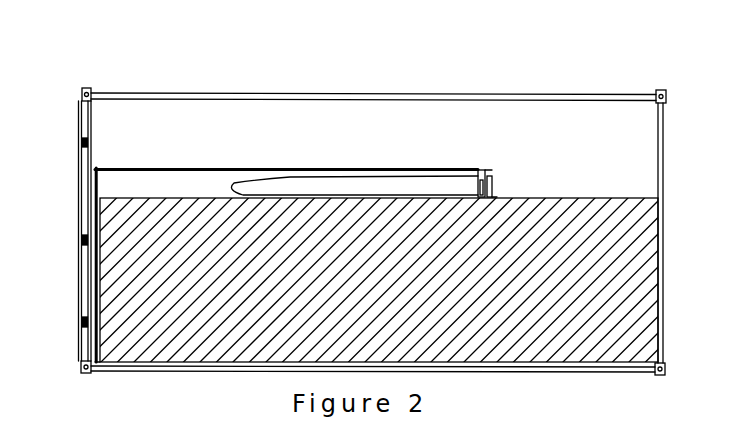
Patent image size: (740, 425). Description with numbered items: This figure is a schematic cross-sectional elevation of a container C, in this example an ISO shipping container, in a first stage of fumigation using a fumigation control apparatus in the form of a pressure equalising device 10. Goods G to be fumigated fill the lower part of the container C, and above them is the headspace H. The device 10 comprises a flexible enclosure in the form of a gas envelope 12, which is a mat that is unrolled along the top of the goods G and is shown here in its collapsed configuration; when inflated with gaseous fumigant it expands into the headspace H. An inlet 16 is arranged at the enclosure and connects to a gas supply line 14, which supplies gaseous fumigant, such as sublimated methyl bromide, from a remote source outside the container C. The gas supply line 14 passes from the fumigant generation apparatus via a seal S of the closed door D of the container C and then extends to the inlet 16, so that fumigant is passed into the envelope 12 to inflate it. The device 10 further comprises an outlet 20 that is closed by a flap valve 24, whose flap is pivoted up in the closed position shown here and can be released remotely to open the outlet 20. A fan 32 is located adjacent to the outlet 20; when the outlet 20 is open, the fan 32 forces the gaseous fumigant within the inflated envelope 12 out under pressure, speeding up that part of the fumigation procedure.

The pressure equalising device 10 is at (348, 195).
The gas envelope 12 is at (290, 176).
The gas supply line 14 is at (213, 168).
The inlet 16 is at (488, 169).
The outlet 20 is at (494, 196).
The flap valve 24 is at (491, 176).
The fan 32 is at (477, 168).
The container C is at (208, 94).
The closed door D is at (78, 150).
The goods G is at (370, 280).
The headspace H is at (286, 141).
The seal S is at (75, 358).